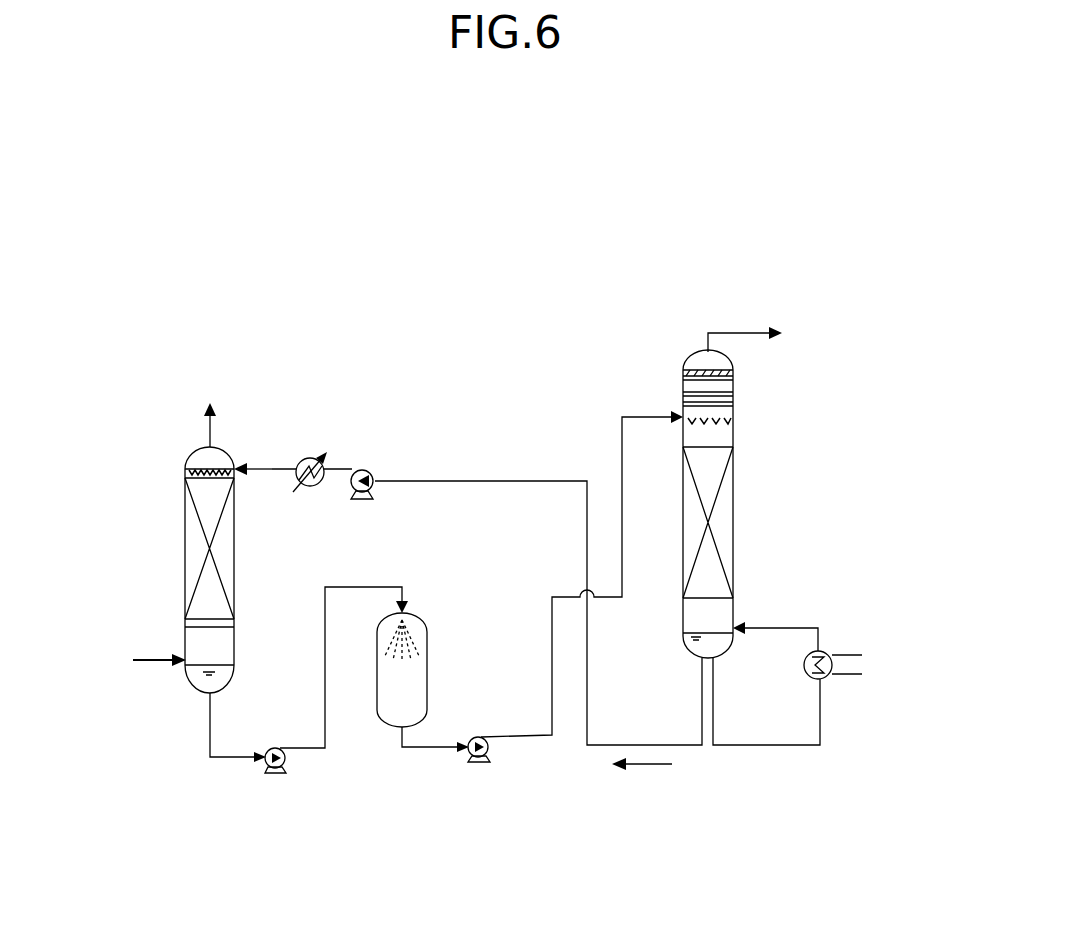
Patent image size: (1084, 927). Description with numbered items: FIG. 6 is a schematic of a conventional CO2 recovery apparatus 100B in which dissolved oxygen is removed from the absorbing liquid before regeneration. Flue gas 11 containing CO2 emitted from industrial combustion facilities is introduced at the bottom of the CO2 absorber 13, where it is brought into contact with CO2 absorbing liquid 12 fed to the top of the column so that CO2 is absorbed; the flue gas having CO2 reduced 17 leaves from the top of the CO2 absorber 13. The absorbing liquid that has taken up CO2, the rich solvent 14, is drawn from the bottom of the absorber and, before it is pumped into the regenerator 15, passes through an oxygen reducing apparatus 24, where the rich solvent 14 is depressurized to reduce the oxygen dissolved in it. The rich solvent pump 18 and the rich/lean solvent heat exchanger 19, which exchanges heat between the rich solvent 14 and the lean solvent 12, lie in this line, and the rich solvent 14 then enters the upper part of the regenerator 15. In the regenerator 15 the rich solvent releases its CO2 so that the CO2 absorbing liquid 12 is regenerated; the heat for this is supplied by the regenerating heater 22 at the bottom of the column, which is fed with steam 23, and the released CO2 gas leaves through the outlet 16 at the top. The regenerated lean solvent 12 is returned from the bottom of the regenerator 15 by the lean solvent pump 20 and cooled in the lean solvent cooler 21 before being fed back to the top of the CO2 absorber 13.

The CO2 recovery apparatus 100B is at (347, 196).
The flue gas 11 is at (150, 649).
The CO2 absorbing liquid 12 is at (650, 800).
The CO2 absorber 13 is at (224, 438).
The rich solvent 14 is at (236, 812).
The regenerator 15 is at (690, 344).
The CO2 gas outlet 16 is at (736, 333).
The flue gas having CO2 reduced 17 is at (209, 428).
The rich solvent pump 18 is at (276, 776).
The rich/lean solvent heat exchanger 19 is at (478, 766).
The lean solvent pump 20 is at (366, 470).
The lean solvent cooler 21 is at (333, 515).
The regenerating heater 22 is at (828, 648).
The steam 23 is at (856, 654).
The oxygen reducing apparatus 24 is at (373, 697).